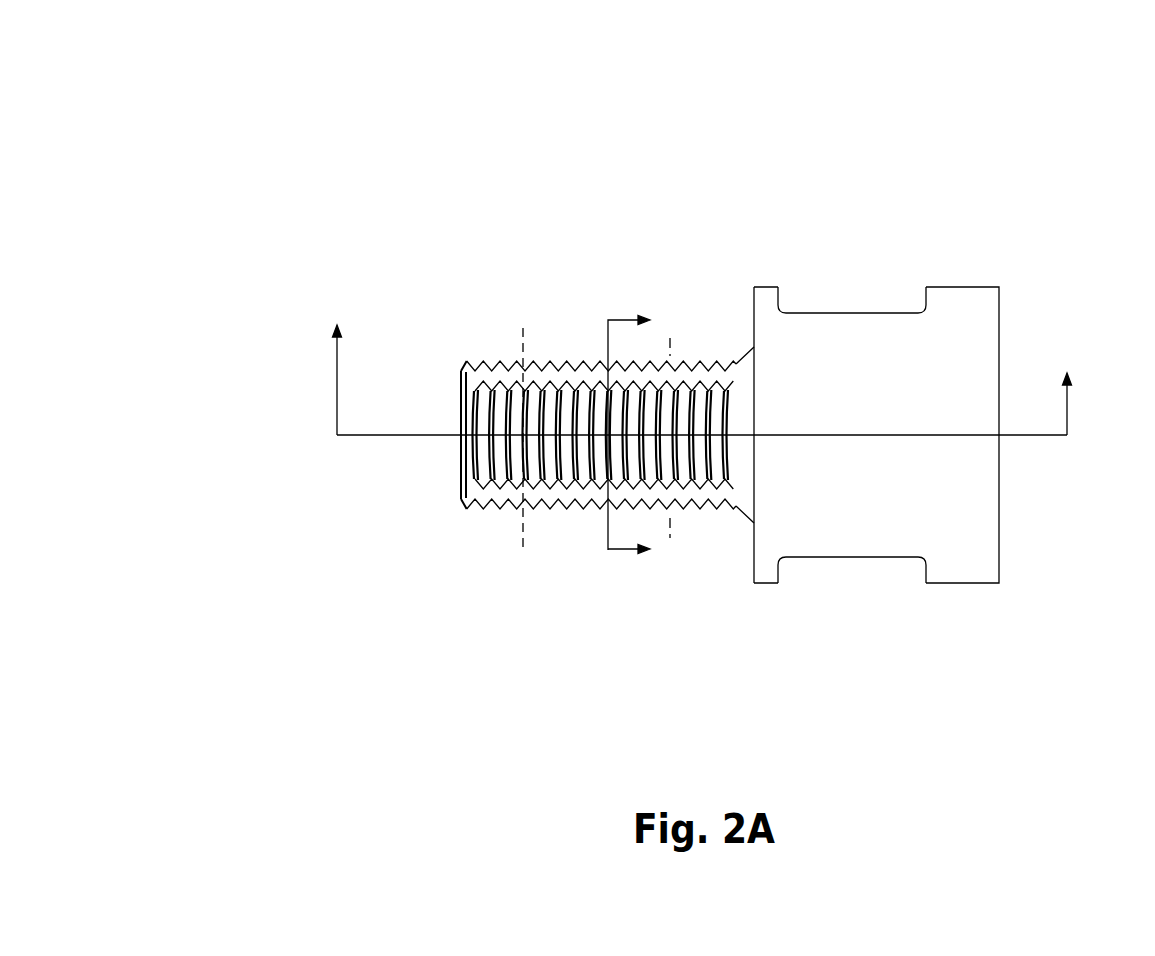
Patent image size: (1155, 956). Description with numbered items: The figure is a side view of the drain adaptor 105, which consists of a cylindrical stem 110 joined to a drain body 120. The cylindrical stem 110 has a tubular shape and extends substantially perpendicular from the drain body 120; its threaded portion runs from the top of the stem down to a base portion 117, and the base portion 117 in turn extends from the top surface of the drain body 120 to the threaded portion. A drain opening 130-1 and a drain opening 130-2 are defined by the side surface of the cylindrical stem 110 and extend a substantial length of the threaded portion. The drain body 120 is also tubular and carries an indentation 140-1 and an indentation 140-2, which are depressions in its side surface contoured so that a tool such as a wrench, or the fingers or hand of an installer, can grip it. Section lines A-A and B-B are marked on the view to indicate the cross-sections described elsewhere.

The drain adaptor 105 is at (265, 57).
The cylindrical stem 110 is at (452, 500).
The base portion 117 is at (743, 350).
The drain body 120 is at (926, 346).
The drain opening 130-1 is at (551, 509).
The drain opening 130-2 is at (551, 361).
The indentation 140-1 is at (850, 567).
The indentation 140-2 is at (842, 303).